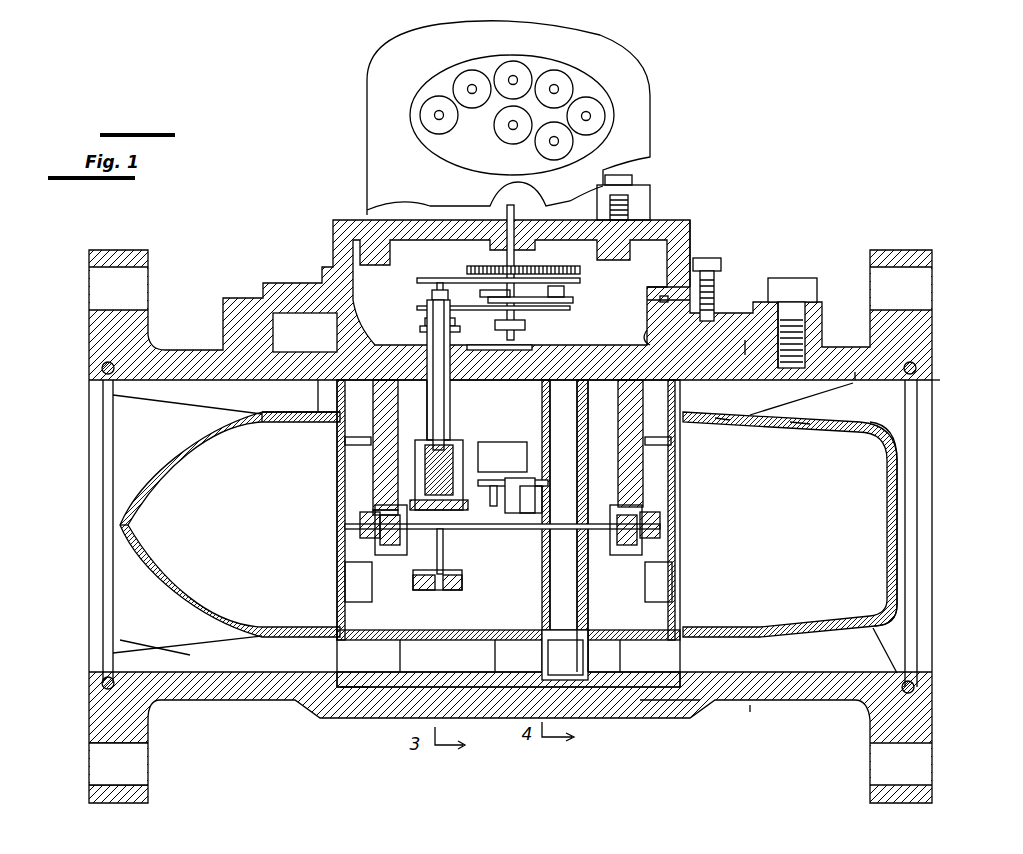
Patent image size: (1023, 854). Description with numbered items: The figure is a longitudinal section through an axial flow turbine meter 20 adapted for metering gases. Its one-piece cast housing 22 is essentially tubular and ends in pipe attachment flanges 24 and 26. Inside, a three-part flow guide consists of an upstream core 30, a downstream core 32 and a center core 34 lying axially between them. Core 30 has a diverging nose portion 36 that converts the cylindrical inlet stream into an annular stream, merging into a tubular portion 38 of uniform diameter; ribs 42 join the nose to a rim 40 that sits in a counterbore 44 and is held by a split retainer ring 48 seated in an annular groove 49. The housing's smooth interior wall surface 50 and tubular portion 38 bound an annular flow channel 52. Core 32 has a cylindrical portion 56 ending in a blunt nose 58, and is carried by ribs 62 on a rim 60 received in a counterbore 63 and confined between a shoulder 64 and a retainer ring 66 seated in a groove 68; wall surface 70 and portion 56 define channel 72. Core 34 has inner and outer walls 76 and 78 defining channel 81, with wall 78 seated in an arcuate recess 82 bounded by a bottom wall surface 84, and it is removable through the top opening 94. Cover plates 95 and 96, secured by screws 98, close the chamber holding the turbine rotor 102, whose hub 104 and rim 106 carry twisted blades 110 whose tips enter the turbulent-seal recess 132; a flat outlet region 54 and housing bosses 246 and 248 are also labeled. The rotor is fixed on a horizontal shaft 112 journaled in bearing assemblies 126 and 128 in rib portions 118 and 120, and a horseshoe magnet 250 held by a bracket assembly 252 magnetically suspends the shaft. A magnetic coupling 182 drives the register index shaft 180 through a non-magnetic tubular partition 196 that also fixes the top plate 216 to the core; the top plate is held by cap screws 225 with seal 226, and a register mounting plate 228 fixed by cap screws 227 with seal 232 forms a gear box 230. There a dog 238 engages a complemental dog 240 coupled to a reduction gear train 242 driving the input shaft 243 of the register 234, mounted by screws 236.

The axial flow turbine meter 20 is at (750, 712).
The housing 22 is at (690, 716).
The pipe attachment flange 24 is at (148, 725).
The pipe attachment flange 26 is at (932, 722).
The upstream core 30 is at (283, 644).
The downstream core 32 is at (738, 641).
The center core 34 is at (645, 692).
The nose portion 36 is at (118, 527).
The tubular portion 38 is at (292, 412).
The rim 40 is at (162, 380).
The ribs 42 is at (215, 425).
The counterbore 44 is at (160, 672).
The split retainer ring 48 is at (100, 378).
The annular groove 49 is at (100, 682).
The interior cylindrical wall surface 50 is at (262, 415).
The annular fluid flow channel 52 is at (310, 402).
The top wall of outlet liner 54 is at (800, 426).
The cylindrical portion 56 is at (722, 420).
The blunt nose 58 is at (897, 515).
The rim 60 is at (880, 675).
The ribs 62 is at (880, 428).
The counterbore 63 is at (890, 372).
The annular radial shoulder 64 is at (855, 380).
The split retainer ring 66 is at (935, 381).
The annular housing groove 68 is at (915, 688).
The wall surface 70 is at (758, 380).
The annular flow channel 72 is at (745, 425).
The inner annular wall 76 is at (452, 640).
The outer annular wall 78 is at (398, 672).
The annular flow channel 81 is at (632, 676).
The arcuate recess 82 is at (487, 672).
The bottom wall surface 84 is at (360, 700).
The top opening 94 is at (337, 332).
The cover plate 95 is at (345, 580).
The cover plate 96 is at (672, 480).
The screws 98 is at (352, 440).
The metering turbine rotor 102 is at (590, 590).
The hub 104 is at (585, 545).
The rim 106 is at (548, 615).
The turbine blades 110 is at (555, 405).
The metering rotor output shaft 112 is at (470, 545).
The rib portion 118 is at (380, 490).
The rib portion 120 is at (655, 505).
The bearing assembly 126 is at (365, 522).
The bearing assembly 128 is at (650, 527).
The annular recess 132 is at (536, 356).
The register index shaft 180 is at (440, 400).
The magnetic coupling 182 is at (452, 466).
The tubular partition 196 is at (420, 396).
The top plate 216 is at (660, 318).
The cap screws 225 is at (795, 290).
The O-ring and annular groove assembly 226 is at (775, 282).
The cap screws 227 is at (715, 262).
The register mounting plate 228 is at (692, 222).
The register gear box 230 is at (357, 248).
The O-ring and annular groove assembly 232 is at (672, 300).
The meter register 234 is at (653, 108).
The screws 236 is at (645, 178).
The dog 238 is at (460, 329).
The complemental dog 240 is at (415, 320).
The register reduction drive gear train assembly 242 is at (565, 297).
The register input shaft 243 is at (520, 256).
The body boss 246 is at (746, 355).
The body boss 248 is at (668, 340).
The permanent horseshoe magnet 250 is at (510, 530).
The bracket assembly 252 is at (502, 440).